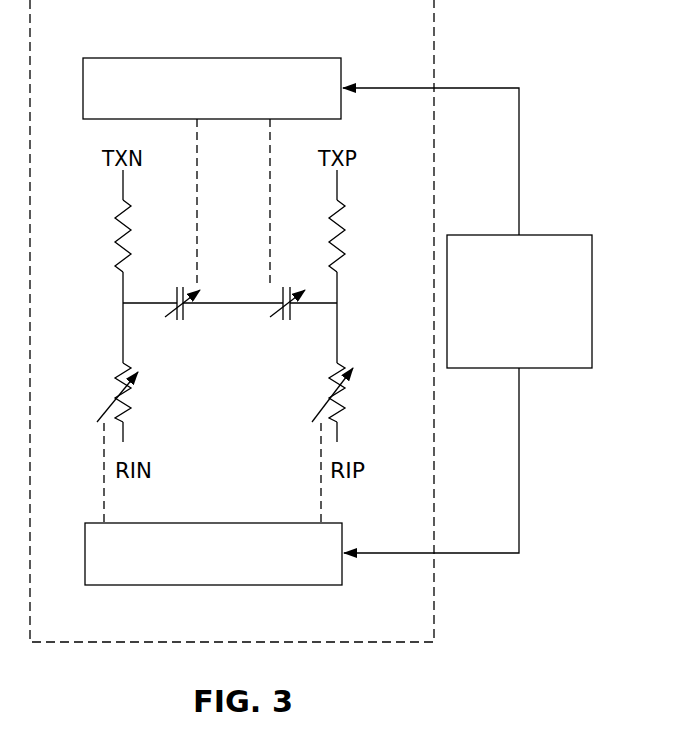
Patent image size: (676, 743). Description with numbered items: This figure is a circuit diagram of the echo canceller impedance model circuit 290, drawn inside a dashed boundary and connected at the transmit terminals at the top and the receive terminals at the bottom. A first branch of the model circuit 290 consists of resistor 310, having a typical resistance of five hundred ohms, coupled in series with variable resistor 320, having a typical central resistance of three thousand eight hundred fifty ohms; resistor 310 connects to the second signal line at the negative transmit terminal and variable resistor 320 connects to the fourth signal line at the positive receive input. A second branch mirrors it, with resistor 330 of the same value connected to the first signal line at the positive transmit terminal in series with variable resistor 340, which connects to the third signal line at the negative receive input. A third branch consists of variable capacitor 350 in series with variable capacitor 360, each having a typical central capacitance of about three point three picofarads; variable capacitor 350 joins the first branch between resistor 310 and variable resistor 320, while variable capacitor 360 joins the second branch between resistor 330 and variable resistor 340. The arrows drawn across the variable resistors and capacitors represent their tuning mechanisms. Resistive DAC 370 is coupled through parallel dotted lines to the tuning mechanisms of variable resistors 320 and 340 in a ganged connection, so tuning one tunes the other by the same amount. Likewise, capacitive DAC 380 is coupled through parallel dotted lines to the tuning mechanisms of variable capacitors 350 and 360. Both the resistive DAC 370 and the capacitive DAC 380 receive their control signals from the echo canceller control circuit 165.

The model circuit 290 is at (434, 52).
The capacitive digital-to-analog converter 380 is at (258, 57).
The echo canceller control circuit 165 is at (560, 234).
The resistive digital-to-analog converter 370 is at (262, 586).
The resistor 310 is at (117, 231).
The resistor 330 is at (345, 236).
The variable capacitor 350 is at (188, 309).
The variable capacitor 360 is at (295, 310).
The variable resistor 320 is at (118, 379).
The variable resistor 340 is at (345, 405).